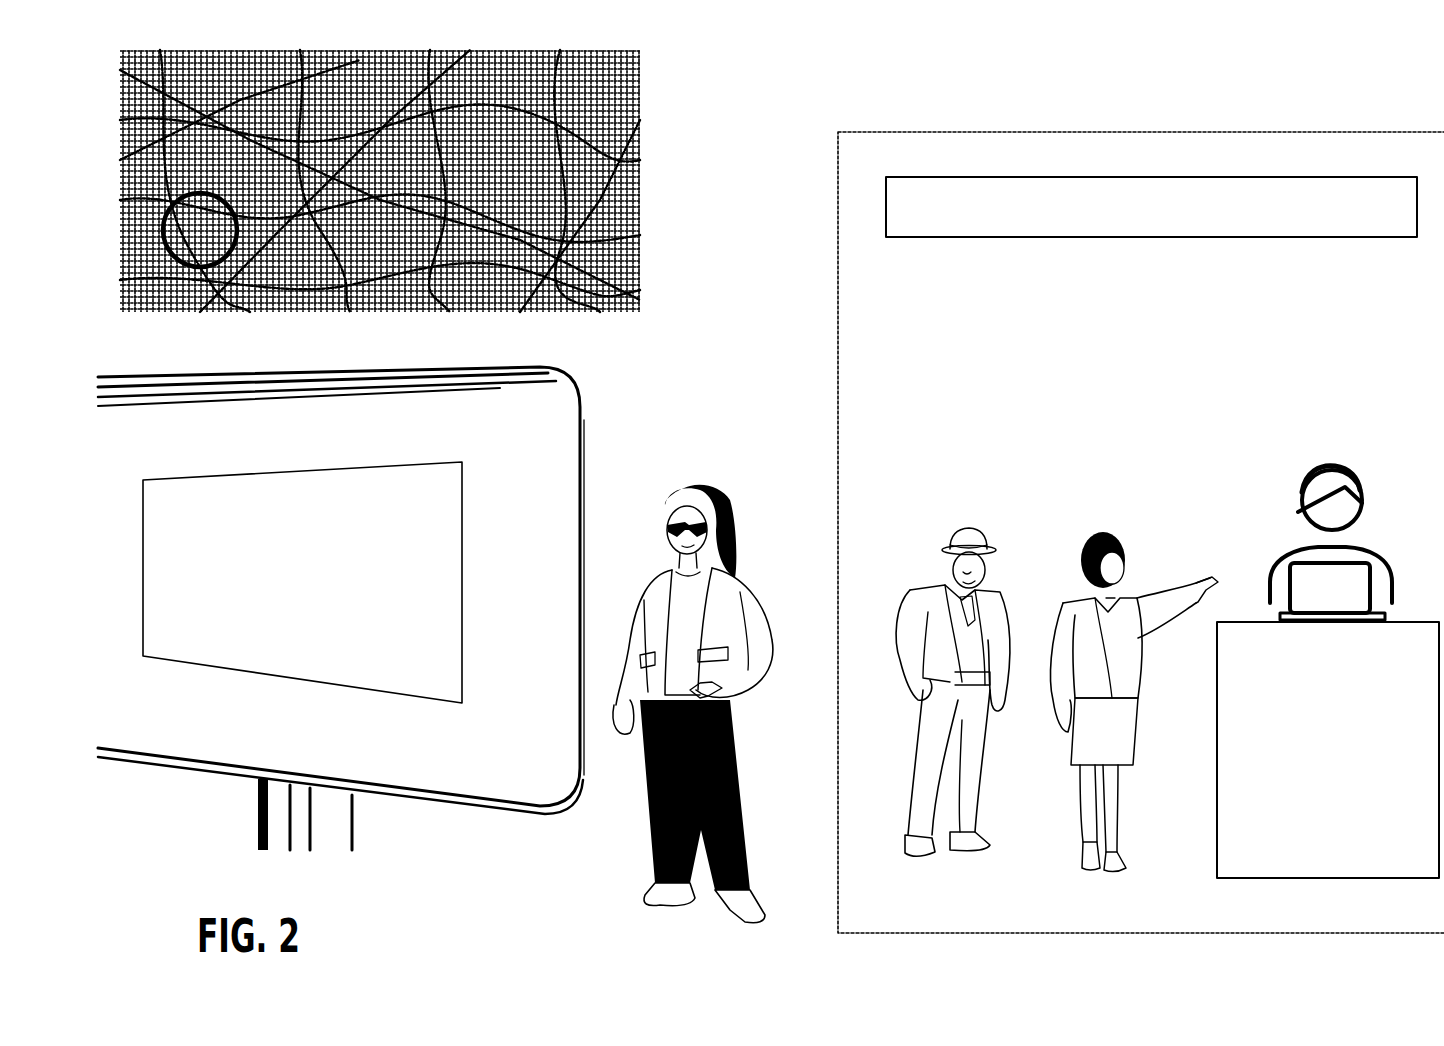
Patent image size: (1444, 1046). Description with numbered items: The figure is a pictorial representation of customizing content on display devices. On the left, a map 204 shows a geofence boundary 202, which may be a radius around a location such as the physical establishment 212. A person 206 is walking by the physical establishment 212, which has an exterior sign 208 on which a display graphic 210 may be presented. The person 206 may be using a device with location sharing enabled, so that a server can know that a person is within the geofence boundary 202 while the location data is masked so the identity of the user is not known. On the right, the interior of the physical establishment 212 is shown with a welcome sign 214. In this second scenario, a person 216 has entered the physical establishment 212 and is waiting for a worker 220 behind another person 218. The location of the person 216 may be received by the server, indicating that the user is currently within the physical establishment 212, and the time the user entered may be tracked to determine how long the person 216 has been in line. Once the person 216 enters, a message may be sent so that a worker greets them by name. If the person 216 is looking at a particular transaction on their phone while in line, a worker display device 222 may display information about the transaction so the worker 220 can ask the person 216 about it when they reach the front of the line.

The geofence boundary 202 is at (226, 257).
The map 204 is at (638, 132).
The person 206 is at (712, 490).
The exterior sign 208 is at (580, 417).
The display graphic 210 is at (437, 460).
The physical establishment 212 is at (862, 132).
The welcome sign 214 is at (1198, 237).
The person 216 is at (970, 527).
The person 218 is at (1110, 535).
The worker 220 is at (1330, 460).
The worker display device 222 is at (1310, 622).